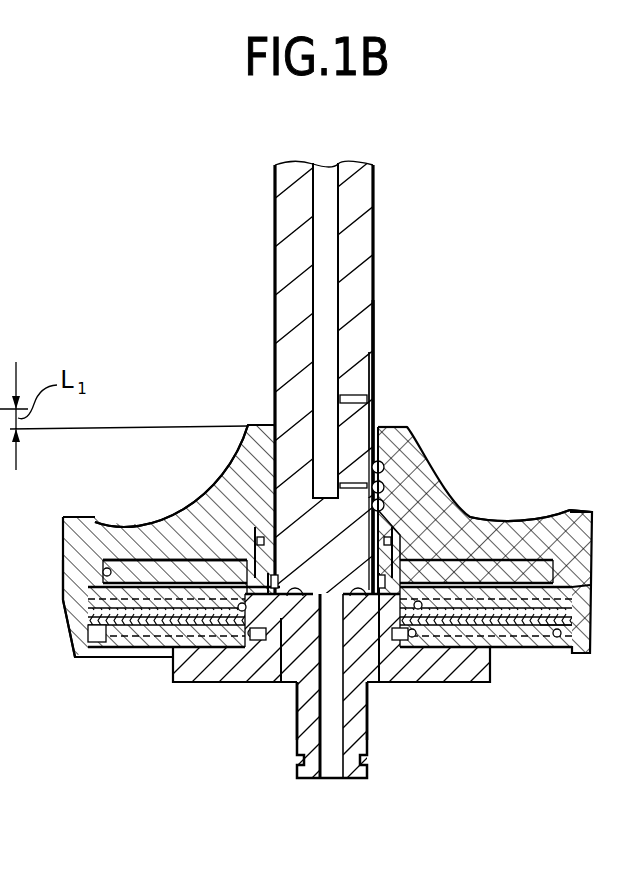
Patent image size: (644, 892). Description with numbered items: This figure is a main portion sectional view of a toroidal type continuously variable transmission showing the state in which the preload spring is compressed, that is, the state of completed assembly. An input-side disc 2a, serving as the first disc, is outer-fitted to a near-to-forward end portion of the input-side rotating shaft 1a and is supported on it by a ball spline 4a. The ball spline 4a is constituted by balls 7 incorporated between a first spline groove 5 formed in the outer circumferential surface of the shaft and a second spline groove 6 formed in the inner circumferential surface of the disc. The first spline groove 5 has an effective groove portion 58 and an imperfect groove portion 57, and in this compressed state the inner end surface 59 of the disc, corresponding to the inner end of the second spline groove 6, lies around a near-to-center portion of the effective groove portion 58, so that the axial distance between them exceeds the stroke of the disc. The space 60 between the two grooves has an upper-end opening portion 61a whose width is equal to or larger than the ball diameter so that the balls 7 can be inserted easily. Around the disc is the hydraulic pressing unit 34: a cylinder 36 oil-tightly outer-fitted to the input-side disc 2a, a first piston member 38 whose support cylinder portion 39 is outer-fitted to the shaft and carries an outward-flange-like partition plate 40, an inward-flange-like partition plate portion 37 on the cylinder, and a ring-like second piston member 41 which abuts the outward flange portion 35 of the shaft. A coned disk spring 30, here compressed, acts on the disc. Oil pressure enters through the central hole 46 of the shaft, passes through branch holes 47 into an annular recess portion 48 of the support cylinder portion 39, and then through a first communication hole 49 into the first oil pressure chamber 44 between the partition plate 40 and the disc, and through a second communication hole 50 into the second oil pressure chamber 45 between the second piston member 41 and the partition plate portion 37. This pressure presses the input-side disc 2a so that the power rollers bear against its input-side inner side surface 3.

The input-side rotating shaft 1a is at (266, 220).
The input-side disc 2a is at (92, 508).
The input-side inner side surface 3 is at (193, 545).
The ball spline 4a is at (398, 480).
The first spline groove 5 is at (385, 368).
The second spline groove 6 is at (396, 530).
The balls 7 is at (386, 486).
The coned disk spring 30 is at (143, 628).
The pressing unit 34 is at (588, 672).
The outward flange portion 35 is at (183, 683).
The cylinder 36 is at (58, 588).
The partition plate portion 37 is at (512, 647).
The first piston member 38 is at (591, 545).
The support cylinder portion 39 is at (256, 533).
The partition plate 40 is at (167, 577).
The second piston member 41 is at (544, 648).
The first oil pressure chamber 44 is at (143, 556).
The second oil pressure chamber 45 is at (100, 638).
The central hole 46 is at (327, 735).
The branch holes 47 is at (290, 660).
The annular recess portion 48 is at (385, 620).
The first communication hole 49 is at (209, 503).
The second communication hole 50 is at (250, 648).
The imperfect groove portion 57 is at (378, 352).
The effective groove portion 58 is at (372, 406).
The inner end surface 59 is at (400, 428).
The space 60 is at (368, 455).
The upper-end opening portion 61a is at (370, 440).